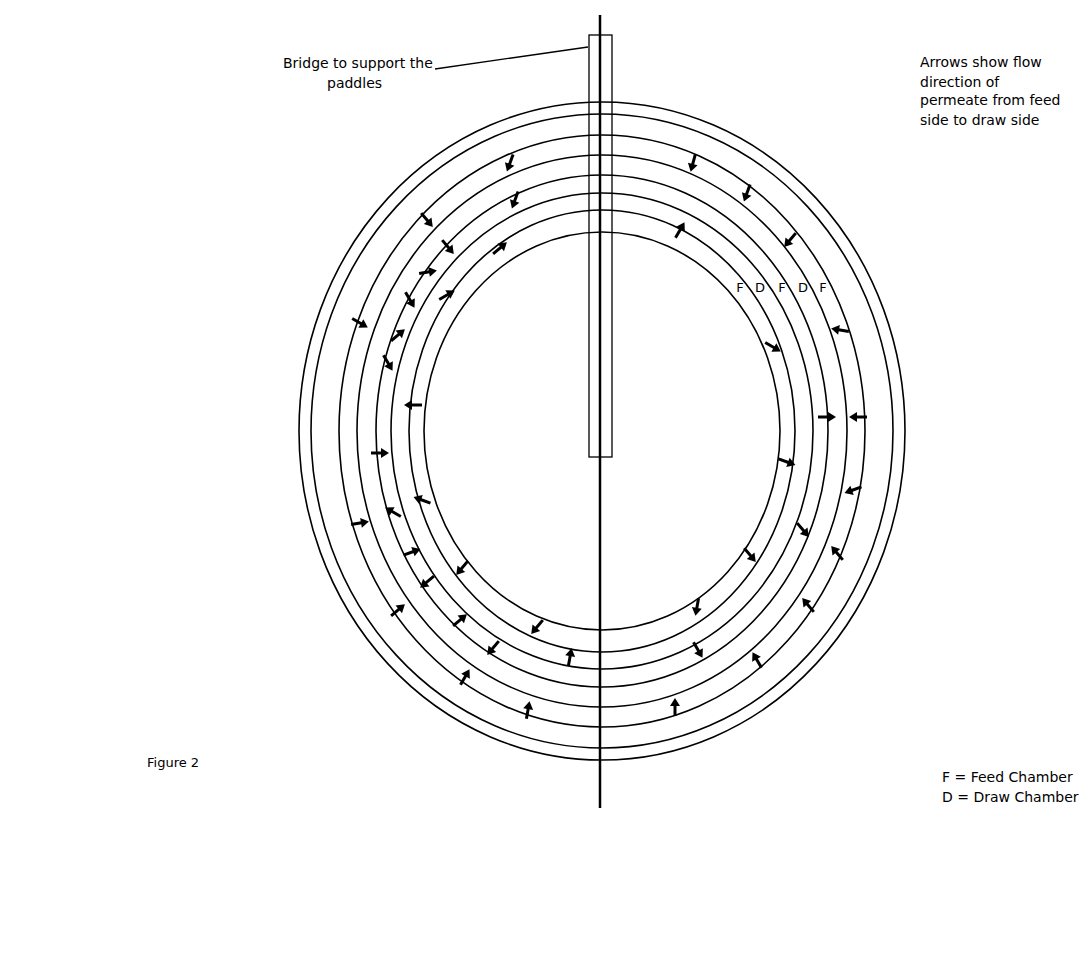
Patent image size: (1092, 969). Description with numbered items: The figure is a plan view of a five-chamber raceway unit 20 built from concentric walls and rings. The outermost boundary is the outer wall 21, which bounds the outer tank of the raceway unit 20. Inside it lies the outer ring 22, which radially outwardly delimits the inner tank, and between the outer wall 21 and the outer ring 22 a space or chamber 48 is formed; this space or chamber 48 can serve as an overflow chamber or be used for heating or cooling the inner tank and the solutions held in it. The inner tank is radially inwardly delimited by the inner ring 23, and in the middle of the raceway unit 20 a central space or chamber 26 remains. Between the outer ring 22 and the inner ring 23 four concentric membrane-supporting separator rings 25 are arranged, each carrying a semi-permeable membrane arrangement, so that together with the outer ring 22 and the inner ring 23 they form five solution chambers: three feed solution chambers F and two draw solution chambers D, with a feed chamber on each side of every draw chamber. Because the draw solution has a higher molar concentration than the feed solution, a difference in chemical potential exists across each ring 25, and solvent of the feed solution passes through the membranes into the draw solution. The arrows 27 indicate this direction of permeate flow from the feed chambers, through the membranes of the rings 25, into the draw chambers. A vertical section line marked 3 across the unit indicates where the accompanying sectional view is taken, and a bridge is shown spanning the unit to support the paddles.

The section line for FIG. 3 is at (600, 15).
The raceway unit 20 is at (648, 431).
The outer wall 21 is at (860, 612).
The outer ring 22 is at (765, 665).
The inner ring 23 is at (523, 253).
The membrane-supporting separator ring 25 is at (463, 247).
The central space or chamber 26 is at (602, 431).
The flow direction arrows 27 is at (760, 190).
The space or chamber 48 is at (893, 518).